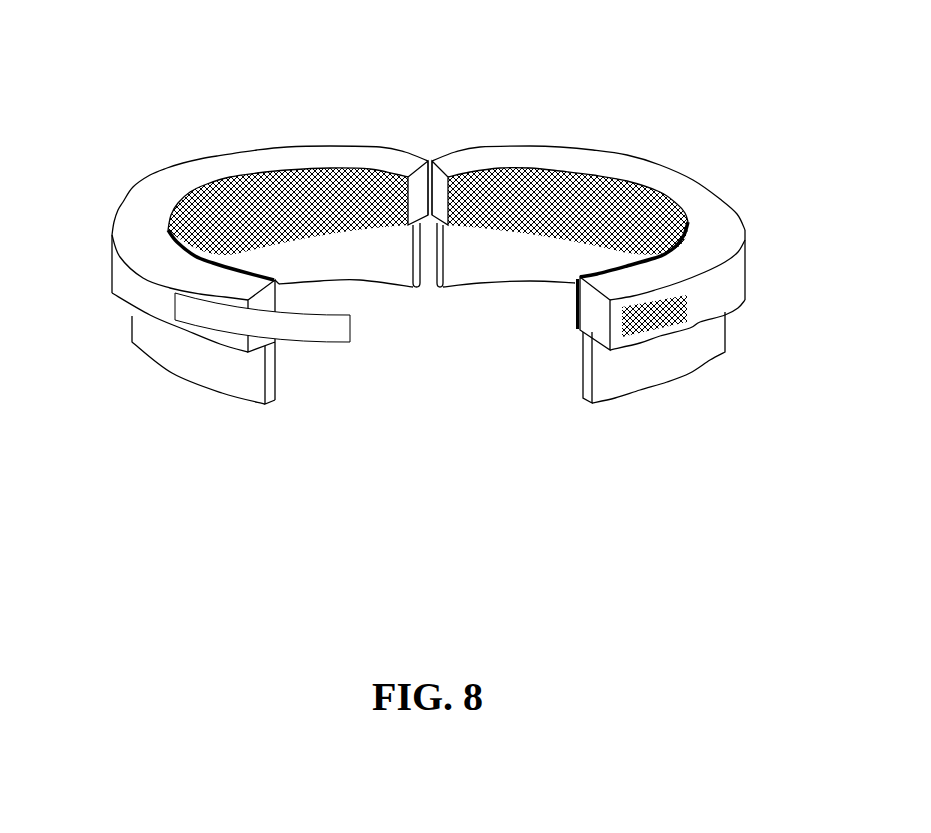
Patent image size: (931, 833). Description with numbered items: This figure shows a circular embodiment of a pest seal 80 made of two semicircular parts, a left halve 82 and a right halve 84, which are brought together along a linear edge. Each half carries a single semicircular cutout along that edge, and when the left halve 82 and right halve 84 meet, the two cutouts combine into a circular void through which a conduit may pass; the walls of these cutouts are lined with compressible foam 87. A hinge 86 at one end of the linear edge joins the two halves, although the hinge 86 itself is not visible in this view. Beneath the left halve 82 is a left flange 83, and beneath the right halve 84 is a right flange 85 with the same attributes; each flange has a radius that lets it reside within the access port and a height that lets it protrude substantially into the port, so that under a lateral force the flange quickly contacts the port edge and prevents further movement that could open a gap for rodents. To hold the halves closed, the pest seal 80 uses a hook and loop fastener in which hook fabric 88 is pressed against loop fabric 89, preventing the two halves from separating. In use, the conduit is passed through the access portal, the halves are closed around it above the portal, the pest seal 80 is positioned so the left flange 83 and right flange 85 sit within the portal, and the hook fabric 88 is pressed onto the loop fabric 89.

The pest seal 80 is at (115, 77).
The left halve 82 is at (108, 260).
The left flange 83 is at (155, 380).
The right halve 84 is at (727, 185).
The right flange 85 is at (687, 382).
The hinge 86 is at (438, 150).
The compressible foam 87 is at (288, 217).
The hook fabric 88 is at (320, 347).
The loop fabric 89 is at (693, 317).